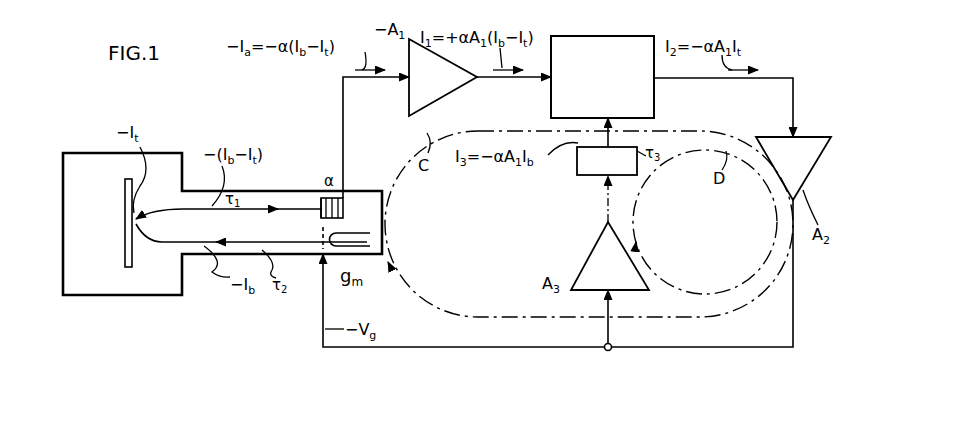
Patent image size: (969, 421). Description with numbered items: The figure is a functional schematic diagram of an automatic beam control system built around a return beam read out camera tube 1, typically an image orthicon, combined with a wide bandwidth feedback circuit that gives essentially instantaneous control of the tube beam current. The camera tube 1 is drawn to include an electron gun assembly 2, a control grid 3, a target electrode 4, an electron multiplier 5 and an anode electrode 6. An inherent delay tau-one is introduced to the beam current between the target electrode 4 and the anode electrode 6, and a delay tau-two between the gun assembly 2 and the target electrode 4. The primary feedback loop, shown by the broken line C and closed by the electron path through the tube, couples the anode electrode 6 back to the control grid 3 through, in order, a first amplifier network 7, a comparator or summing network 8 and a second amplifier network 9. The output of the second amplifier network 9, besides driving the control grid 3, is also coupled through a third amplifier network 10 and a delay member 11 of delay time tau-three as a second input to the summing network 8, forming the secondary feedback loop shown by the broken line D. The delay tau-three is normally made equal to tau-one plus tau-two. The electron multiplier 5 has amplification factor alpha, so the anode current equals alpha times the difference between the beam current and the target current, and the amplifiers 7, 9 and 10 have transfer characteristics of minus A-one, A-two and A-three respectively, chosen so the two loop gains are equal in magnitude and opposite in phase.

The return beam read out camera tube 1 is at (237, 287).
The electron gun assembly 2 is at (334, 236).
The control grid 3 is at (321, 247).
The target electrode 4 is at (125, 254).
The electron multiplier 5 is at (321, 206).
The anode electrode 6 is at (345, 209).
The first amplifier network 7 is at (437, 104).
The comparator or summing network 8 is at (636, 36).
The second amplifier network 9 is at (819, 160).
The third amplifier network 10 is at (600, 240).
The delay member 11 is at (577, 172).